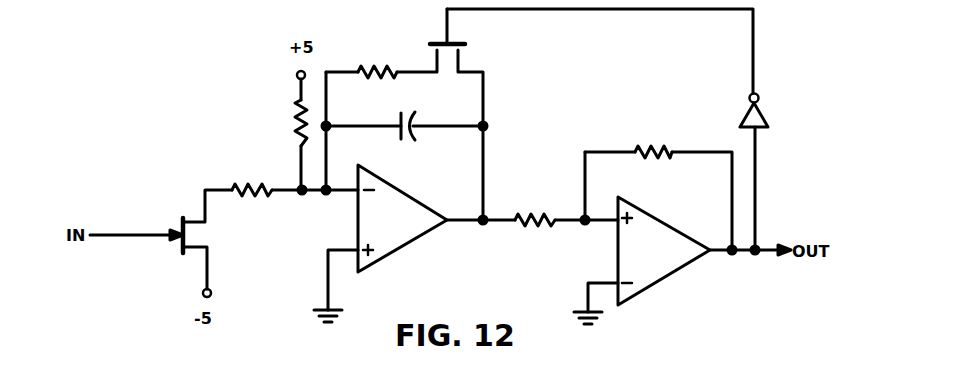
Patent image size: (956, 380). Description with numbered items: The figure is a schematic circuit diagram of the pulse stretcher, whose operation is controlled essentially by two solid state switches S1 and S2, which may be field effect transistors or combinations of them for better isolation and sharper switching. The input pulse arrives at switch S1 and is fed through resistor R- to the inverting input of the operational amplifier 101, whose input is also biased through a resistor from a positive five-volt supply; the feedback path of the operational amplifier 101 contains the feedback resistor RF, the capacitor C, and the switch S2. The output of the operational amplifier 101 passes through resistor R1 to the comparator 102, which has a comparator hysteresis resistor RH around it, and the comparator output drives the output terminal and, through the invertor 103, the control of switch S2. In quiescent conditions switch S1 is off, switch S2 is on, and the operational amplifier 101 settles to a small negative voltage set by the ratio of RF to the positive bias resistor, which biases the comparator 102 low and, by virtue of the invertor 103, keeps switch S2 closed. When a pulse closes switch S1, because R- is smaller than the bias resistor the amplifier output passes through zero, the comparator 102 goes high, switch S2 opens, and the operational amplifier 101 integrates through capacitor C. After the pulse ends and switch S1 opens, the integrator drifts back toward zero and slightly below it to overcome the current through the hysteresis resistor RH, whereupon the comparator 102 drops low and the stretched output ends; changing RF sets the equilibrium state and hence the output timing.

The operational amplifier 101 is at (405, 190).
The comparator 102 is at (660, 218).
The invertor 103 is at (767, 112).
The solid state switch S1 is at (197, 238).
The solid state switch S2 is at (458, 26).
The capacitor C is at (412, 118).
The feedback resistor RF is at (377, 62).
The resistor R- is at (252, 206).
The resistor R1 is at (535, 207).
The comparator hysteresis resistor RH is at (653, 141).